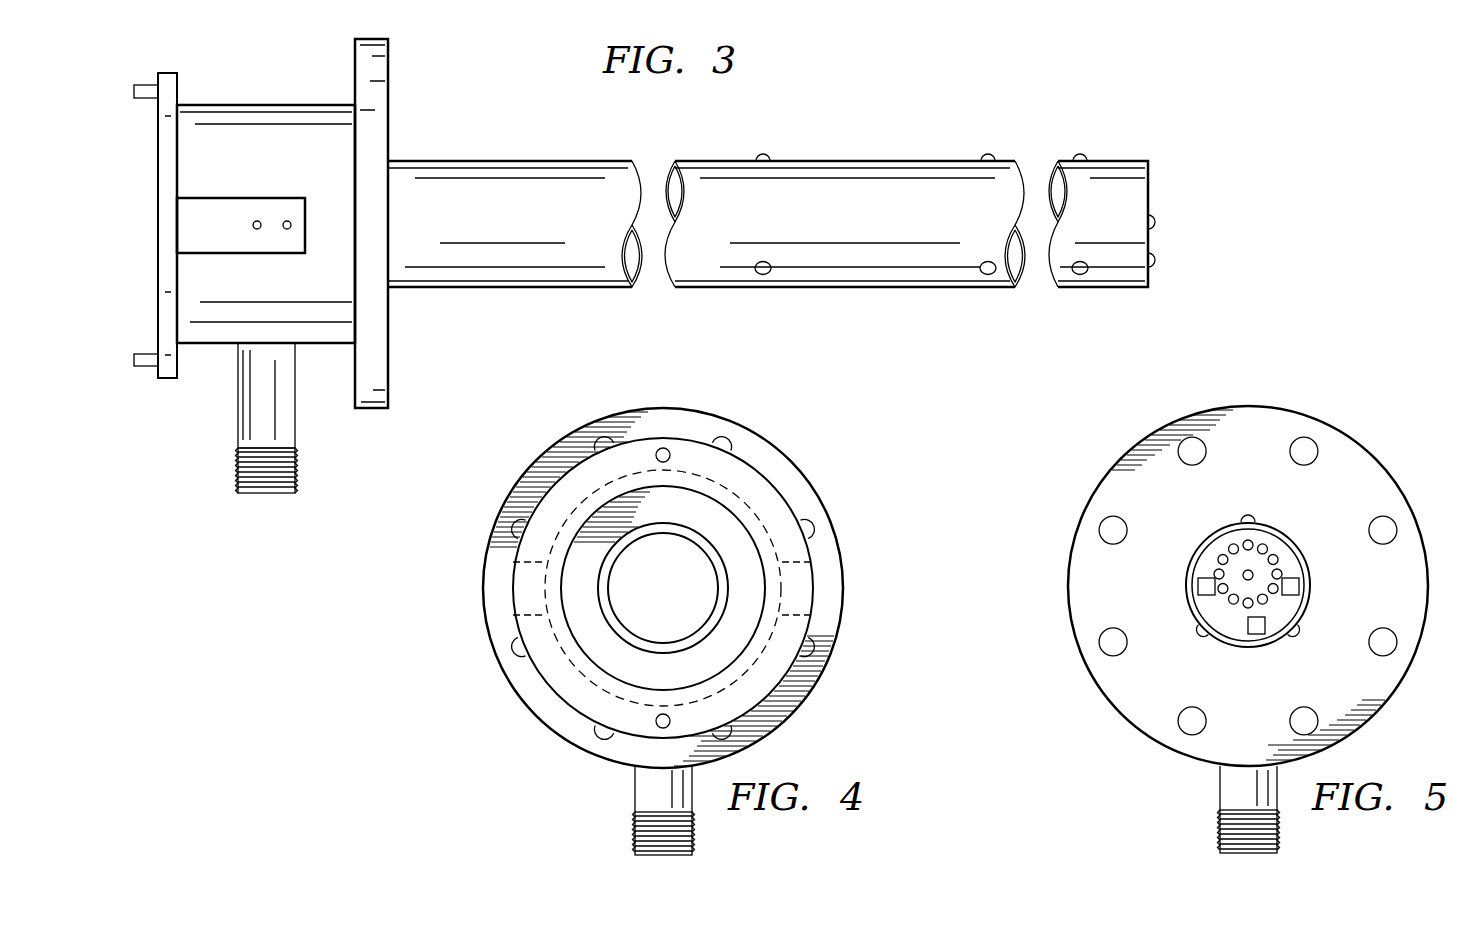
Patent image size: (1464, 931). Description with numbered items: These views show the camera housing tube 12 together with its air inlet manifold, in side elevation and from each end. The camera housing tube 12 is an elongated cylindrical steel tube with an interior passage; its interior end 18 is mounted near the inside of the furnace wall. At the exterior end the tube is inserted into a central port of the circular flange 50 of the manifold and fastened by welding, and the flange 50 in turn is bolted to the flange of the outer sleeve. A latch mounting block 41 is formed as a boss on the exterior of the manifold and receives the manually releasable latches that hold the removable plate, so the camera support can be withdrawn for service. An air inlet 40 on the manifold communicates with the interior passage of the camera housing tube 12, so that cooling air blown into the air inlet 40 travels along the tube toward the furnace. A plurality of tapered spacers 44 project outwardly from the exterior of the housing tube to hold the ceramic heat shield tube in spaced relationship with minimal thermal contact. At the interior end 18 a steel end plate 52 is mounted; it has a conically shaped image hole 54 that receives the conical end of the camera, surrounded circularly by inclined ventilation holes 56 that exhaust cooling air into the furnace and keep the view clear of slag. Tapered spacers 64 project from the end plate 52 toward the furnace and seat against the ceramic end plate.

In FIG. 3, the camera housing tube 12 is at (890, 170).
In FIG. 5, the camera housing tube 12 is at (1266, 532).
In FIG. 3, the interior end 18 is at (1132, 158).
In FIG. 5, the interior end 18 is at (1310, 580).
In FIG. 3, the air inlet 40 is at (258, 495).
In FIG. 4, the air inlet 40 is at (655, 858).
In FIG. 5, the air inlet 40 is at (1240, 856).
In FIG. 3, the latch mounting block 41 is at (242, 198).
In FIG. 3, the spacers 44 is at (763, 155).
In FIG. 3, the circular flange 50 is at (372, 410).
In FIG. 5, the steel end plate 52 is at (1283, 606).
In FIG. 5, the image hole 54 is at (1244, 571).
In FIG. 5, the ventilation holes 56 is at (1215, 571).
In FIG. 3, the spacers 64 is at (1156, 222).
In FIG. 5, the spacers 64 is at (1205, 597).